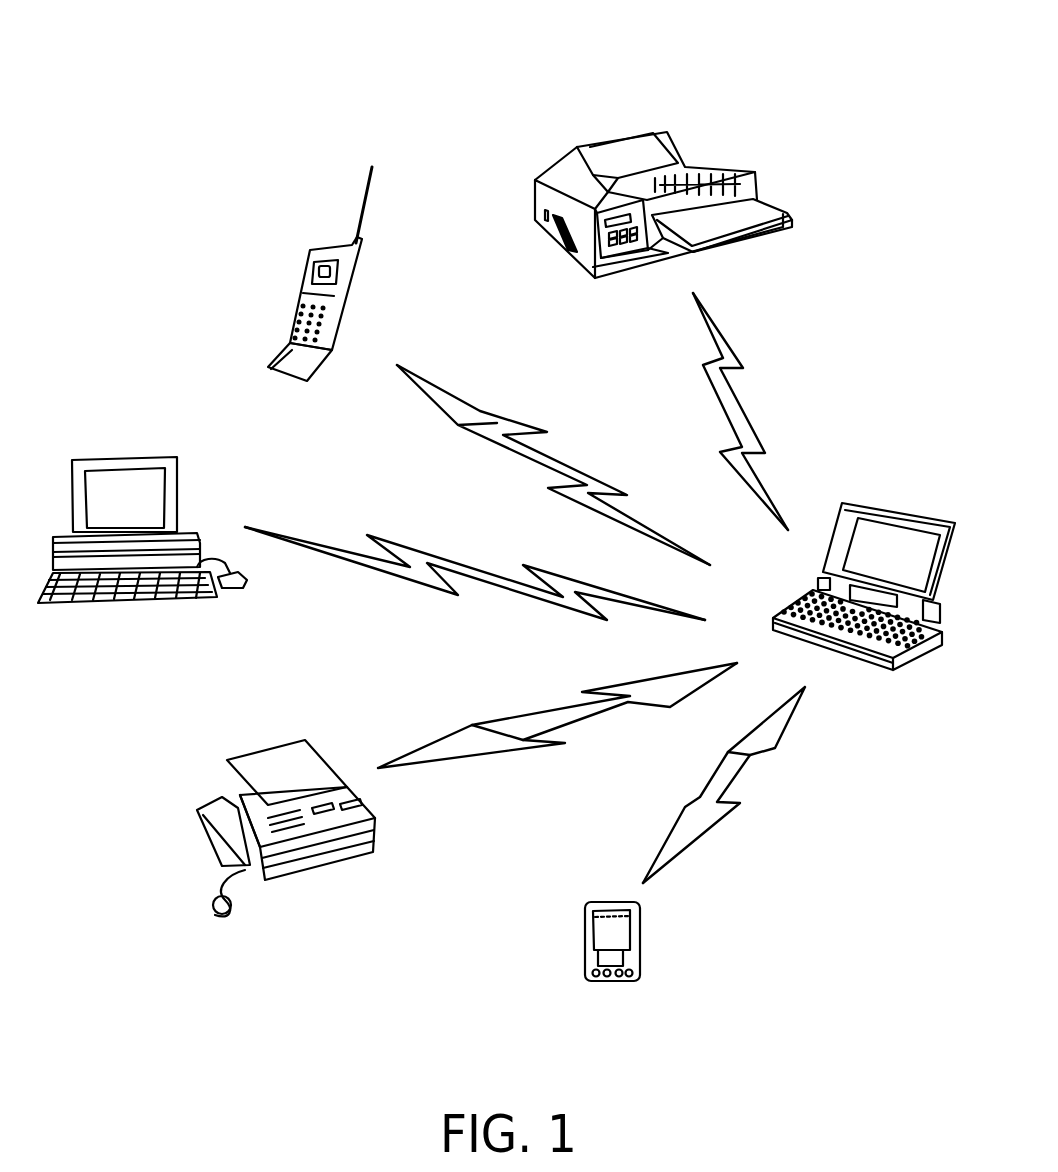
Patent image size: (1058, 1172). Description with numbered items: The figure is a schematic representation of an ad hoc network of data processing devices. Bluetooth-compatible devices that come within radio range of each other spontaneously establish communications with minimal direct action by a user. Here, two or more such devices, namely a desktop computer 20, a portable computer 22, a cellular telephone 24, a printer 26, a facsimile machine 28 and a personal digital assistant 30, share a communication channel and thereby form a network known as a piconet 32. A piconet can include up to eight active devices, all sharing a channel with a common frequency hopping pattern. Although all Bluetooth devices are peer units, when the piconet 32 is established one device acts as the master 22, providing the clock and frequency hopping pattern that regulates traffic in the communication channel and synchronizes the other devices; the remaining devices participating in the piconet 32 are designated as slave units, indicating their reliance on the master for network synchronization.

The desktop computer 20 is at (122, 452).
The portable computer 22 is at (877, 502).
The cellular telephone 24 is at (321, 247).
The printer 26 is at (647, 126).
The facsimile machine 28 is at (259, 746).
The personal digital assistant (PDA) 30 is at (599, 897).
The piconet 32 is at (277, 71).